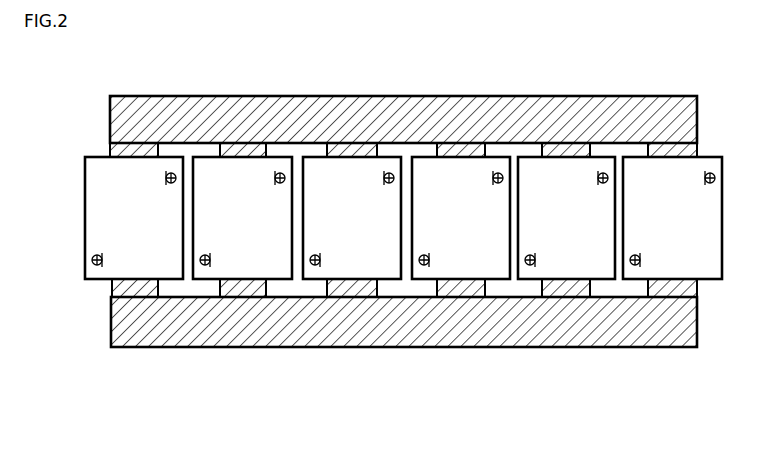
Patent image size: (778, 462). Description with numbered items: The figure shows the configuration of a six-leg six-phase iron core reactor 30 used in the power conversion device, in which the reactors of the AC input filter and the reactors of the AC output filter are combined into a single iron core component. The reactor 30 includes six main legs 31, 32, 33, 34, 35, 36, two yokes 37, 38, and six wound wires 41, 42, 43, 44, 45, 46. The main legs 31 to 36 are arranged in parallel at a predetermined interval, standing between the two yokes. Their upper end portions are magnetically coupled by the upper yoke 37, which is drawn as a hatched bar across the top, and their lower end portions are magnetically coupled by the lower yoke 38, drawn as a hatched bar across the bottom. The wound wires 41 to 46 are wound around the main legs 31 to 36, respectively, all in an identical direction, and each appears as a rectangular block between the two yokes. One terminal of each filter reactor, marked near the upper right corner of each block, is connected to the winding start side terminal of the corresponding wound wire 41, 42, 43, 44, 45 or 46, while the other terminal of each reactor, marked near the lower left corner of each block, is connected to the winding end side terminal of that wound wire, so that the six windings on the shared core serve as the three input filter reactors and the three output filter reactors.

The six-leg six-phase iron core reactor 30 is at (110, 97).
The main leg 31 is at (141, 157).
The main leg 32 is at (248, 157).
The main leg 33 is at (356, 157).
The main leg 34 is at (463, 157).
The main leg 35 is at (571, 157).
The main leg 36 is at (677, 157).
The yoke 37 is at (121, 124).
The yoke 38 is at (122, 326).
The wound wire 41 is at (172, 263).
The wound wire 42 is at (281, 263).
The wound wire 43 is at (391, 263).
The wound wire 44 is at (493, 263).
The wound wire 45 is at (601, 263).
The wound wire 46 is at (711, 263).